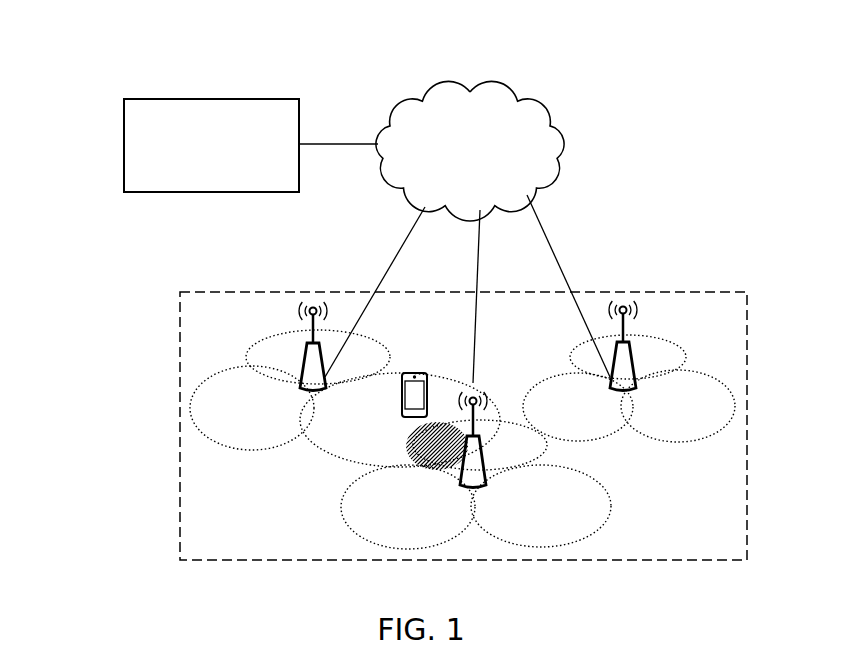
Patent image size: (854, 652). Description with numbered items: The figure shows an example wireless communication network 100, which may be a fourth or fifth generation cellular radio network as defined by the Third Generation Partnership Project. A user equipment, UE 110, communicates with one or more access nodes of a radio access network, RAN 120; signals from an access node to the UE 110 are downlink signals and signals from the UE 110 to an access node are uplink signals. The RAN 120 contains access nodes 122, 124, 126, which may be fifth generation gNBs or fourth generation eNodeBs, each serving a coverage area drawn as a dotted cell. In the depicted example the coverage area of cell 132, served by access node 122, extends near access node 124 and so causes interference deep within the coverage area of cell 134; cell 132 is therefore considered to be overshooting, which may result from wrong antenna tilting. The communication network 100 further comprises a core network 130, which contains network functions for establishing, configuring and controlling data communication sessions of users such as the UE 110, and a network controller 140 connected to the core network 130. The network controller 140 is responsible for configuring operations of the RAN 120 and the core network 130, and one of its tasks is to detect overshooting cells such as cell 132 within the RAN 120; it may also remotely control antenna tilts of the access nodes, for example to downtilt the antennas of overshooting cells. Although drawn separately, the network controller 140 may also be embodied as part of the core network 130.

The communication network 100 is at (118, 66).
The UE 110 is at (418, 371).
The radio access network 120 is at (672, 290).
The access node 122 is at (303, 345).
The access node 124 is at (485, 440).
The access node 126 is at (632, 350).
The core network 130 is at (490, 88).
The cell 132 is at (333, 447).
The cell 134 is at (548, 452).
The network controller 140 is at (210, 98).